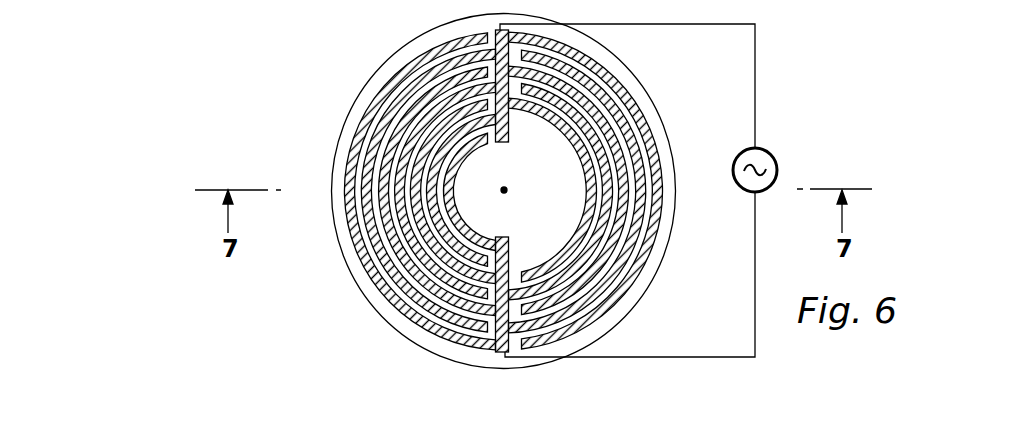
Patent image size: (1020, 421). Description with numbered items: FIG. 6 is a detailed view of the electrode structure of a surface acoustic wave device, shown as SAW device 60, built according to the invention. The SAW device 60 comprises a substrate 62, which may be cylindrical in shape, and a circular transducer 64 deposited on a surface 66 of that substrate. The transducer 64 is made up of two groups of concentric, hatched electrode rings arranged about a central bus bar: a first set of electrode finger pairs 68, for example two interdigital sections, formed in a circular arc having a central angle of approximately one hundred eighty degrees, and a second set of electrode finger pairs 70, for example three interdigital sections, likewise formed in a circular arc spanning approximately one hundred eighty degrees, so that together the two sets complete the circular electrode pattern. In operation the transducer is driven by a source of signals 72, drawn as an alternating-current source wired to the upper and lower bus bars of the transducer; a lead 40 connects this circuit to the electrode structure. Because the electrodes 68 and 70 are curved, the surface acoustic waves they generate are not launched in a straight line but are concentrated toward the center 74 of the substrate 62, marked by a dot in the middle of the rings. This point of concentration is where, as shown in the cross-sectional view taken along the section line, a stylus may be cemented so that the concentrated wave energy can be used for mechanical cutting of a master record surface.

The lead wire 40 is at (627, 74).
The SAW device 60 is at (317, 190).
The substrate 62 is at (656, 110).
The circular transducer 64 is at (469, 222).
The surface 66 is at (386, 320).
The first set of electrode finger pairs 68 is at (661, 179).
The second set of electrode finger pairs 70 is at (353, 236).
The source of signals 72 is at (742, 152).
The center 74 is at (507, 189).